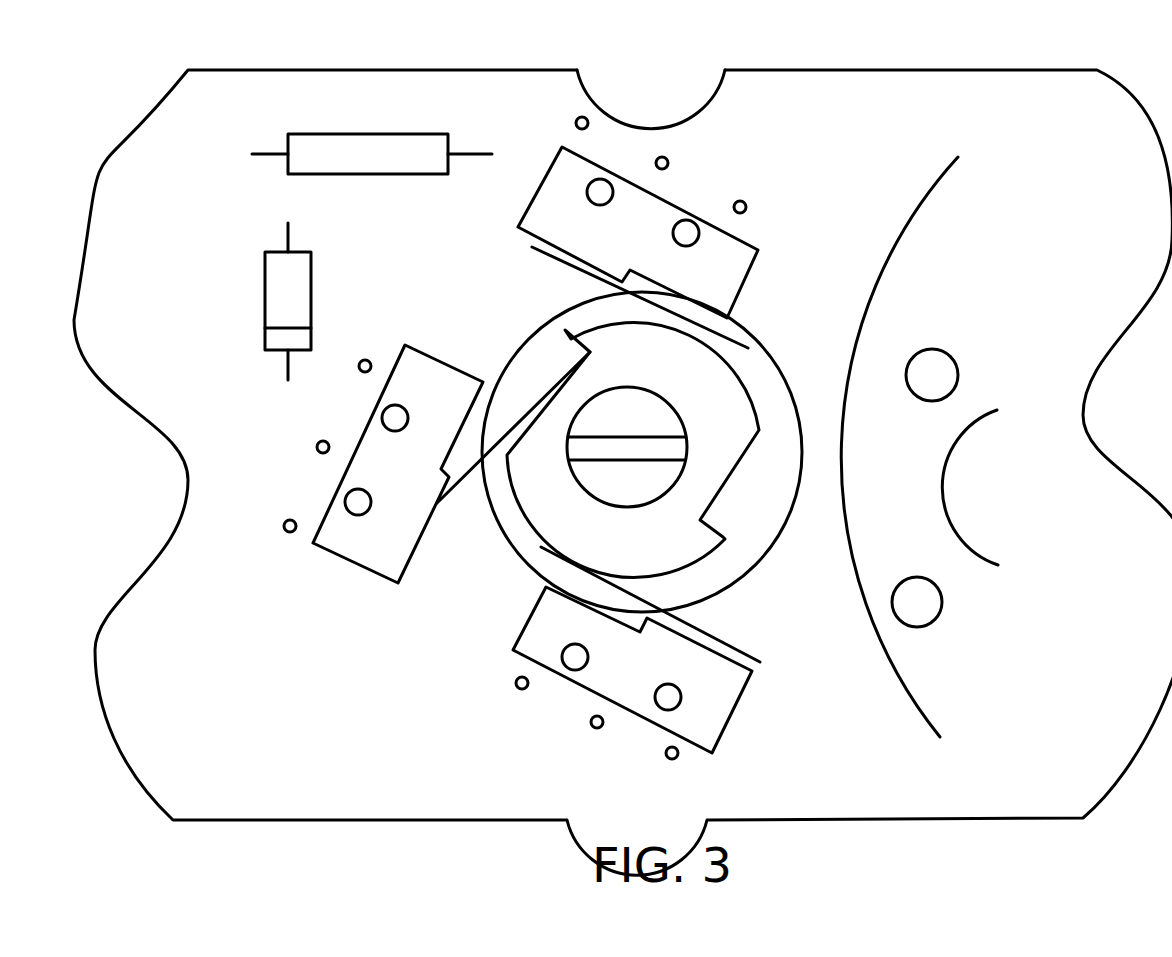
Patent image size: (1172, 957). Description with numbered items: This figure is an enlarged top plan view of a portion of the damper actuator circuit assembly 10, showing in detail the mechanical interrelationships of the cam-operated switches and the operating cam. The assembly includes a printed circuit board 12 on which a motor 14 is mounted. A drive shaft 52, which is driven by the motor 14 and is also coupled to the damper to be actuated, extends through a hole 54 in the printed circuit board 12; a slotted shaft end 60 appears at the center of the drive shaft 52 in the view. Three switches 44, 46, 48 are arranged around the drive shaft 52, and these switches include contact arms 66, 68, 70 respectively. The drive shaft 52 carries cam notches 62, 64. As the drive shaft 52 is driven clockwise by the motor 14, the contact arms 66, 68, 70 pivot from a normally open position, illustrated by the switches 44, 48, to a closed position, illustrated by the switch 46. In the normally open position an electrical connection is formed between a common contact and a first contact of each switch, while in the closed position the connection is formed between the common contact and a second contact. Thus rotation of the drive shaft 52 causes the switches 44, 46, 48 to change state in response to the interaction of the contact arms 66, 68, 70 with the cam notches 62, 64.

The circuit assembly 10 is at (408, 58).
The printed circuit board 12 is at (727, 66).
The motor 14 is at (921, 197).
The switch 44 is at (683, 205).
The switch 46 is at (322, 502).
The switch 48 is at (723, 727).
The drive shaft 52 is at (720, 489).
The hole 54 is at (743, 357).
The shaft with slot 60 is at (650, 437).
The cam notch 62 is at (530, 358).
The cam notch 64 is at (741, 557).
The contact arm 66 is at (566, 265).
The contact arm 68 is at (467, 483).
The contact arm 70 is at (697, 626).